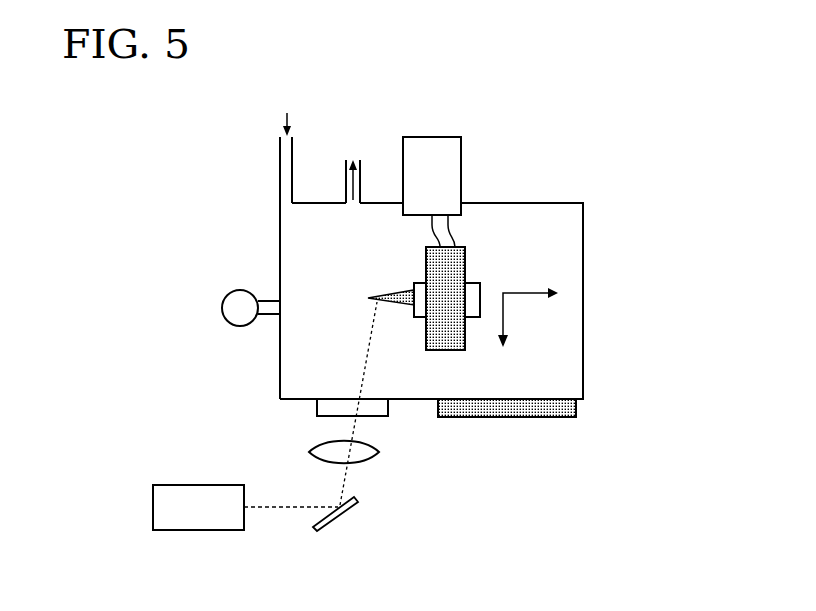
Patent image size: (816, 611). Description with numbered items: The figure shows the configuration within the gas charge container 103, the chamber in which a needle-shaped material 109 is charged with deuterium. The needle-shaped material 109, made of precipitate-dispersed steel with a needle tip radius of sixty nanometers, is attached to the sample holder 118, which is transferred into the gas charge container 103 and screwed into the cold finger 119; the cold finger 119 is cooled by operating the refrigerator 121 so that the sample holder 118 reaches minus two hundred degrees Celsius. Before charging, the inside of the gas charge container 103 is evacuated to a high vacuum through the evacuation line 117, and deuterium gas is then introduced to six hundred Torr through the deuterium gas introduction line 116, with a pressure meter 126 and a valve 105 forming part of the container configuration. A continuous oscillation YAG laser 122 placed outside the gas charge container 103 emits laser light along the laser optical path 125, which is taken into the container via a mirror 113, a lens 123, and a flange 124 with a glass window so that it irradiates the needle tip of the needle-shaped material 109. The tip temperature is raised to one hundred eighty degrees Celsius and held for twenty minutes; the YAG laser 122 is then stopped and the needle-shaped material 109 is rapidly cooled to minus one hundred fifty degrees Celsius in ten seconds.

The gas charge container 103 is at (583, 229).
The valve 105 is at (576, 410).
The needle-shaped material 109 is at (394, 289).
The mirror 113 is at (335, 521).
The deuterium gas introduction line 116 is at (279, 158).
The evacuation line 117 is at (361, 190).
The sample holder 118 is at (475, 283).
The cold finger 119 is at (466, 257).
The refrigerator (cryostat) 121 is at (461, 175).
The YAG laser (laser oscillator) 122 is at (196, 530).
The lens 123 is at (358, 460).
The flange with glass window 124 is at (322, 405).
The laser optical path 125 is at (276, 505).
The pressure meter 126 is at (240, 290).